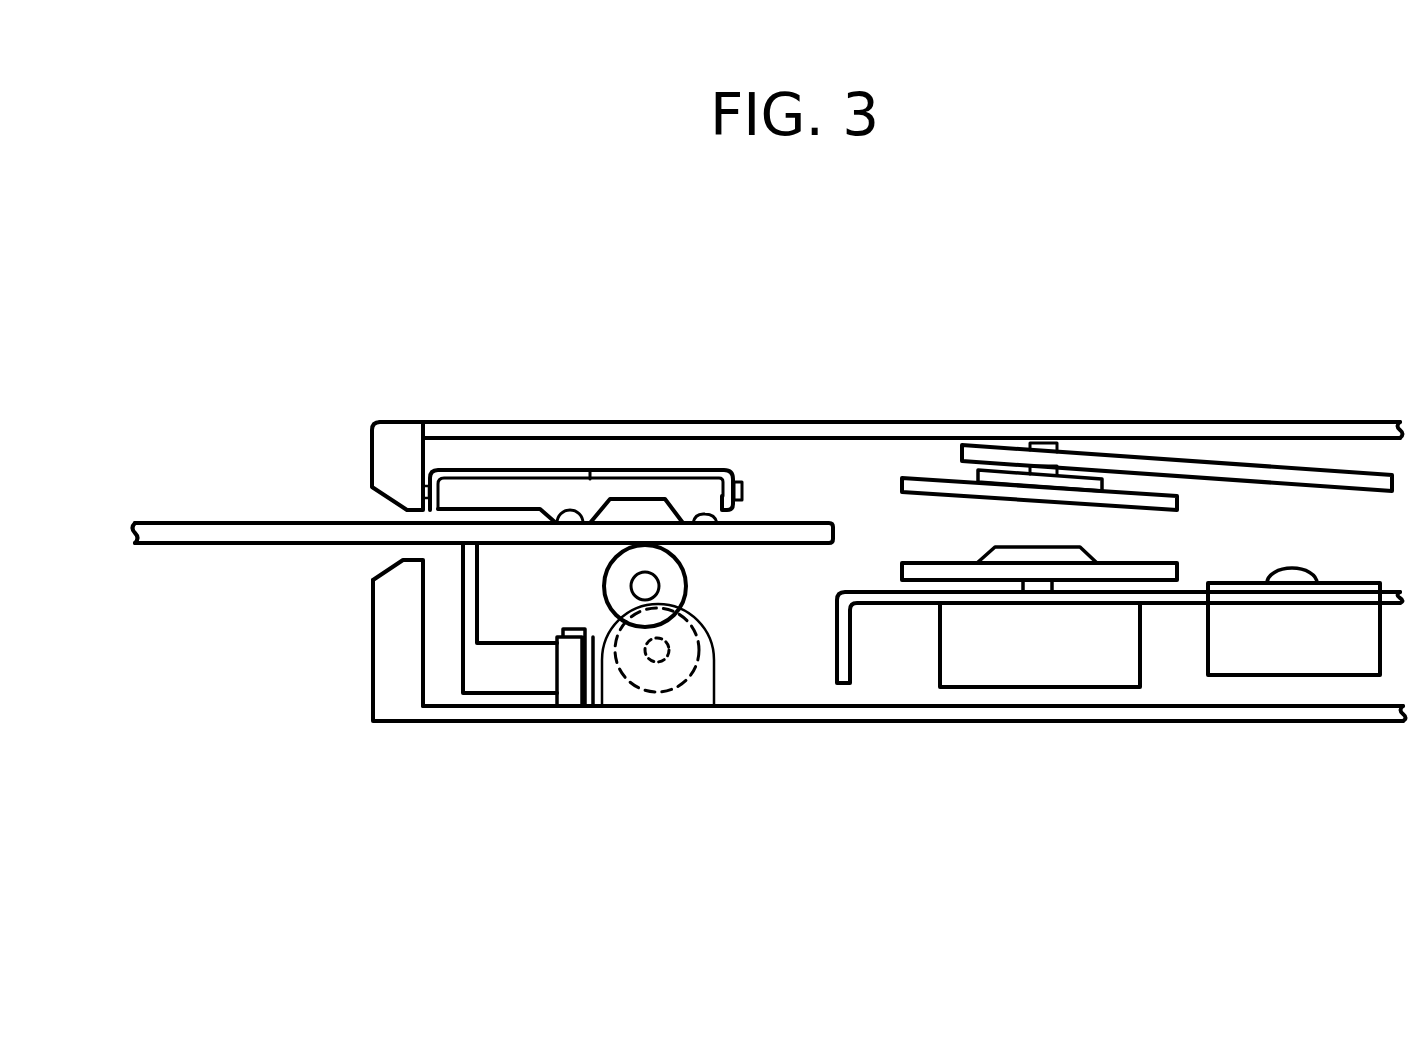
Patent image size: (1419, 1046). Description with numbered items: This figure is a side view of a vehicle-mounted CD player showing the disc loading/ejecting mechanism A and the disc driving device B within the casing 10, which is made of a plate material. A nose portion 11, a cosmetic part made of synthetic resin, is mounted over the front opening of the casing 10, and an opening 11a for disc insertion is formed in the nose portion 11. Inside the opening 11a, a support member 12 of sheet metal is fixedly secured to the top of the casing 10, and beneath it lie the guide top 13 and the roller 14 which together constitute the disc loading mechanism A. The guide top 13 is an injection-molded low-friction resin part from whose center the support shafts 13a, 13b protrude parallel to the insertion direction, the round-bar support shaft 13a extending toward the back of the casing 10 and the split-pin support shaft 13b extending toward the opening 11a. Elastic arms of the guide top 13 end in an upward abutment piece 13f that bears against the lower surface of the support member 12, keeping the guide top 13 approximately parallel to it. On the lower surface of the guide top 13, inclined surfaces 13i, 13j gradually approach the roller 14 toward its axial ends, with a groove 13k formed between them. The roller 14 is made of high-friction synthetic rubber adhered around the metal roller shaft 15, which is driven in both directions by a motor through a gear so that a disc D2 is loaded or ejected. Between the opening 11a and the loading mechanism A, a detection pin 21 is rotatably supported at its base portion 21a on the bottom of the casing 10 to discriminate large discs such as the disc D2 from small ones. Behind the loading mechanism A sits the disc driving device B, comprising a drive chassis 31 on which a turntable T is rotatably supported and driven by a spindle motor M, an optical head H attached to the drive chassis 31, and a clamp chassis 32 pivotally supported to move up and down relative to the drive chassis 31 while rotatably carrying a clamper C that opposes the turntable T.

The casing 10 is at (710, 416).
The nose portion 11 is at (382, 695).
The opening 11a is at (377, 558).
The support member 12 is at (533, 470).
The guide top 13 is at (475, 493).
The support shaft 13a is at (742, 486).
The support shaft 13b is at (410, 488).
The abutment piece 13f is at (592, 470).
The inclined surface 13i is at (568, 513).
The inclined surface 13j is at (712, 520).
The groove 13k is at (637, 512).
The roller 14 is at (614, 706).
The roller shaft 15 is at (712, 706).
The detection pin 21 is at (467, 658).
The base portion 21a is at (570, 690).
The drive chassis 31 is at (1337, 607).
The clamp chassis 32 is at (1255, 466).
The disc loading/ejecting mechanism A is at (703, 562).
The disc driving device B is at (903, 660).
The clamper C is at (923, 478).
The disc D2 is at (203, 546).
The optical head H is at (1238, 660).
The motor M is at (1070, 677).
The turntable T is at (1160, 568).